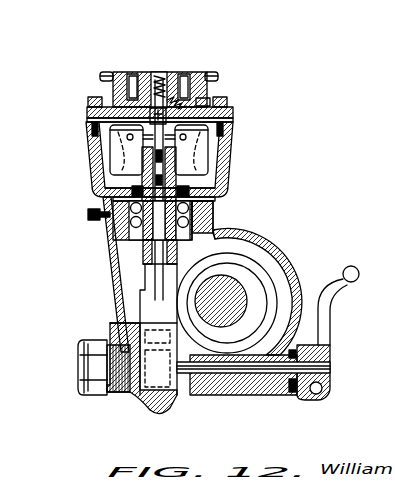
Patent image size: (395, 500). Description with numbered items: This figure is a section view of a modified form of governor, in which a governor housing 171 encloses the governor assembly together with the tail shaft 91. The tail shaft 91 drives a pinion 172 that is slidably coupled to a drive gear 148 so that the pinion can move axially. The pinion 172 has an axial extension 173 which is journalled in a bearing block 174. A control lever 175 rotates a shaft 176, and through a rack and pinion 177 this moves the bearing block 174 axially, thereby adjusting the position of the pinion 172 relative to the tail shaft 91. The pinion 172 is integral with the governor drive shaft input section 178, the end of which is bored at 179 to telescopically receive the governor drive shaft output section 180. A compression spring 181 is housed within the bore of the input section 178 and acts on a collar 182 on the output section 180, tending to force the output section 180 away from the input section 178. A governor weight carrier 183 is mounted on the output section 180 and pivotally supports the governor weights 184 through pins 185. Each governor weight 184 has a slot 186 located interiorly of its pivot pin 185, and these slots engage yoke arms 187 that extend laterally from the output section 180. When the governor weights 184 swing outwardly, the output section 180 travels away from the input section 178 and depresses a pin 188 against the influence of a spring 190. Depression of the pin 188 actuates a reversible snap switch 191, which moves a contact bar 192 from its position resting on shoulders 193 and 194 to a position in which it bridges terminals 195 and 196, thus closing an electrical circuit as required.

The tail shaft 91 is at (236, 278).
The drive gear 148 is at (355, 270).
The governor housing 171 is at (112, 398).
The pinion 172 is at (152, 298).
The axial extension 173 is at (157, 335).
The bearing block 174 is at (150, 397).
The control lever 175 is at (328, 316).
The shaft 176 is at (253, 374).
The rack and pinion 177 is at (190, 395).
The governor drive shaft input section 178 is at (155, 253).
The bore 179 is at (232, 200).
The governor drive shaft output section 180 is at (178, 167).
The compression spring 181 is at (212, 211).
The collar 182 is at (214, 183).
The governor weight carrier 183 is at (128, 160).
The governor weights 184 is at (212, 151).
The pins 185 is at (210, 138).
The slot 186 is at (233, 112).
The yoke arms 187 is at (233, 119).
The pin 188 is at (203, 99).
The spring 190 is at (160, 78).
The reversible snap switch 191 is at (186, 74).
The contact bar 192 is at (149, 72).
The shoulder 193 is at (115, 107).
The shoulder 194 is at (226, 100).
The terminal 195 is at (122, 72).
The terminal 196 is at (186, 80).